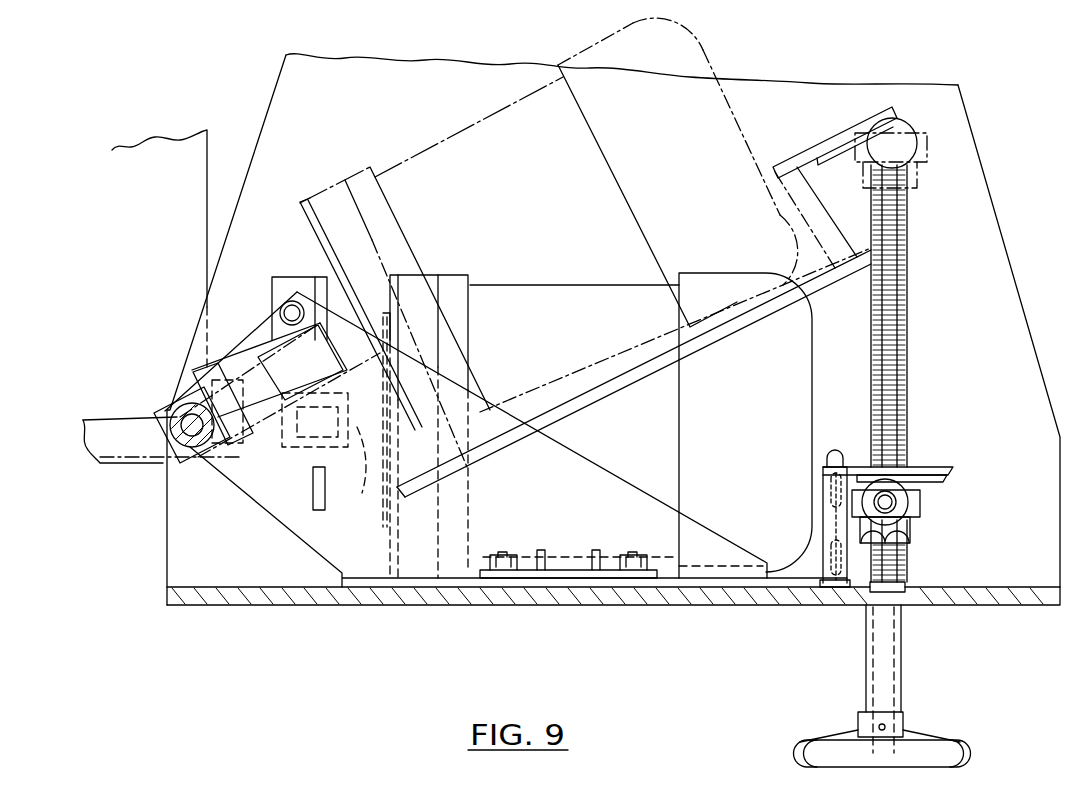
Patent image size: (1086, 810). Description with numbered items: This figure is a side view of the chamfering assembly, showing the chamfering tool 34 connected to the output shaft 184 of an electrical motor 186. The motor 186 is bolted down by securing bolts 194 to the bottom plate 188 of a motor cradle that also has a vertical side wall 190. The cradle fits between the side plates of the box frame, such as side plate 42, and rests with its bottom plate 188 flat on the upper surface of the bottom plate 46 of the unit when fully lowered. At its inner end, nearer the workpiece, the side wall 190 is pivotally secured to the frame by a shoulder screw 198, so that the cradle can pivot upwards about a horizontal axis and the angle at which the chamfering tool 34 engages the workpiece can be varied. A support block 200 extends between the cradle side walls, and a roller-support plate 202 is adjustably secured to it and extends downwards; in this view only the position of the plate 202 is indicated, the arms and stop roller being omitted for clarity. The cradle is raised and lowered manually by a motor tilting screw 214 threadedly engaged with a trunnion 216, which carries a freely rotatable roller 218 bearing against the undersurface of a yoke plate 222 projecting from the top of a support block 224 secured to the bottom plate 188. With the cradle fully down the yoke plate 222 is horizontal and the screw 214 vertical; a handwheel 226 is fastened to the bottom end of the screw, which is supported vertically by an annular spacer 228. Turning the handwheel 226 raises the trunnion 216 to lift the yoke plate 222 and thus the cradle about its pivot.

The chamfering tool 34 is at (193, 452).
The side plate 42 is at (245, 566).
The bottom plate 46 is at (558, 590).
The output shaft 184 is at (363, 472).
The electrical motor 186 is at (656, 455).
The bottom plate 188 is at (427, 580).
The vertical side wall 190 is at (328, 554).
The securing bolts 194 is at (632, 553).
The shoulder screw 198 is at (177, 412).
The support block 200 is at (281, 278).
The roller-support plate 202 is at (313, 493).
The motor tilting screw 214 is at (872, 250).
The trunnion 216 is at (908, 529).
The roller 218 is at (908, 500).
The yoke plate 222 is at (933, 468).
The support block 224 is at (833, 520).
The handwheel 226 is at (960, 753).
The annular spacer 228 is at (898, 584).